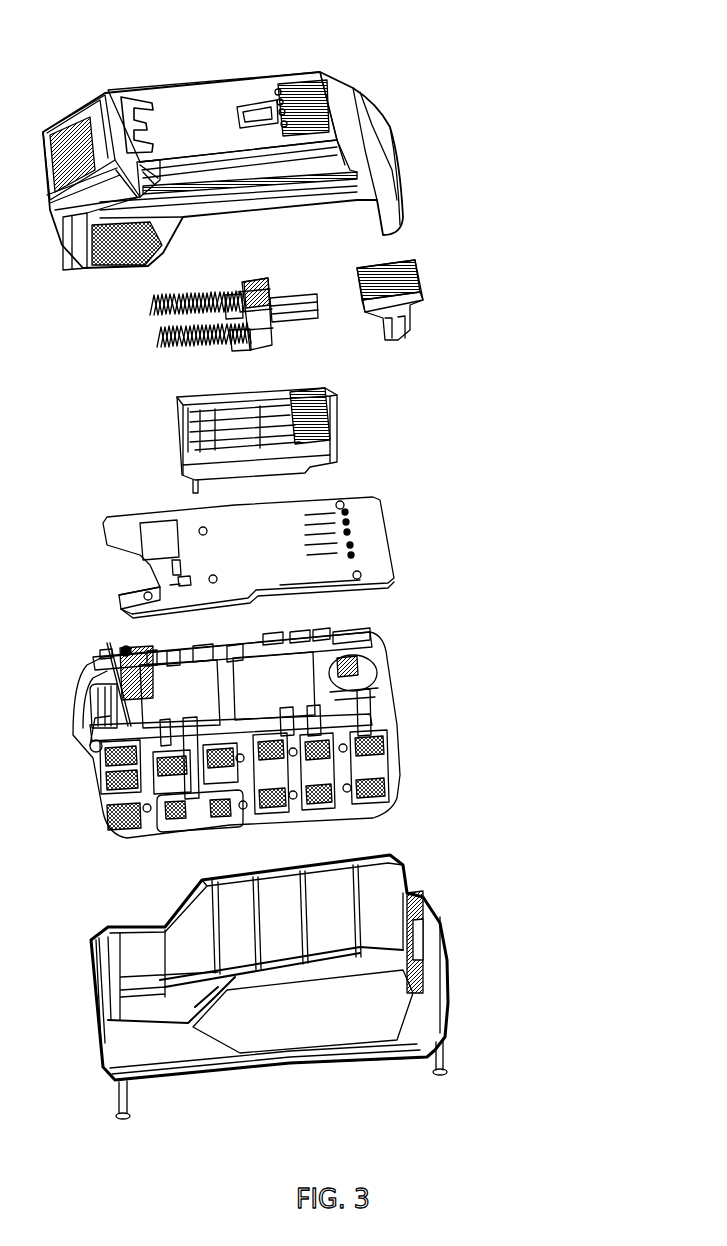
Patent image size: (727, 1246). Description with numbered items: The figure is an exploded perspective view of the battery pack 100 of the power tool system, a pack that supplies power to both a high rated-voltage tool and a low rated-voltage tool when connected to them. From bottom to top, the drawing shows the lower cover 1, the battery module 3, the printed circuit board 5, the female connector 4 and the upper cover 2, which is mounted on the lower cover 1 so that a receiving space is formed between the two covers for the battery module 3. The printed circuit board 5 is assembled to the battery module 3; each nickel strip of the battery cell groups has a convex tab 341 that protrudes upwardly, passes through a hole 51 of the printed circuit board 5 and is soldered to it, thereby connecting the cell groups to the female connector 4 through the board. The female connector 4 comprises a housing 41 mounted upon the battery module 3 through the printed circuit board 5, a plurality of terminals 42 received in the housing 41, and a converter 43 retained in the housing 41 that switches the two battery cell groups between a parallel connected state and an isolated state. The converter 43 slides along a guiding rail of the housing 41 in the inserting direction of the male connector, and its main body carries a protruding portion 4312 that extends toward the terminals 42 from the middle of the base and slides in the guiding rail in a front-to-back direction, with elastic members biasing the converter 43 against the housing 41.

The battery pack 100 is at (212, 38).
The lower cover 1 is at (357, 1013).
The upper cover 2 is at (210, 118).
The battery module 3 is at (100, 715).
The convex tab 341 is at (92, 748).
The female connector 4 is at (589, 352).
The housing 41 is at (317, 447).
The terminals 42 is at (407, 330).
The converter 43 is at (270, 340).
The protruding portion 4312 is at (283, 292).
The printed circuit board 5 is at (360, 513).
The hole 51 is at (123, 592).